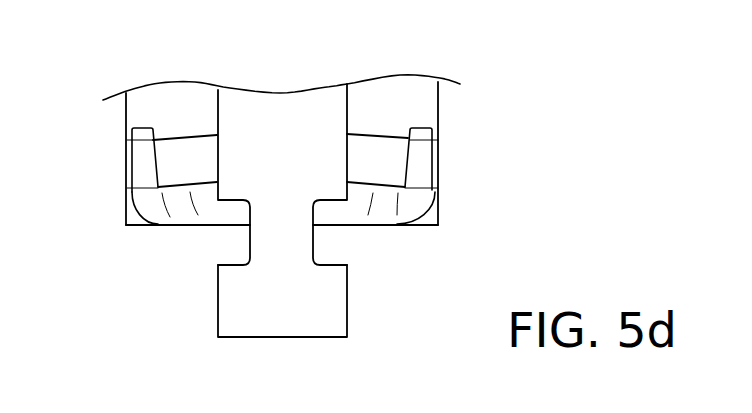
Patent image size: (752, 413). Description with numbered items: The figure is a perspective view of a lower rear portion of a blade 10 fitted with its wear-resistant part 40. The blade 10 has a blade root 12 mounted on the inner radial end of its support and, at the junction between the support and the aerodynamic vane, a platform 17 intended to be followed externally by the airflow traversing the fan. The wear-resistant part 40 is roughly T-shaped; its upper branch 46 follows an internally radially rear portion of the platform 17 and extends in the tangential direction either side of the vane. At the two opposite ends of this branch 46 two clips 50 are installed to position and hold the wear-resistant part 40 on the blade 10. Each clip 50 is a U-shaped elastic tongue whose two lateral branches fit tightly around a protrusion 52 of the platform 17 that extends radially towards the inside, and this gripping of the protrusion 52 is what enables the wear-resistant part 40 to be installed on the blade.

The blade 10 is at (340, 59).
The blade root 12 is at (328, 310).
The platform 17 is at (170, 103).
The wear-resistant part 40 is at (433, 236).
The upper branch of the T 46 is at (187, 208).
The clip 50 is at (145, 157).
The protrusion 52 is at (378, 155).